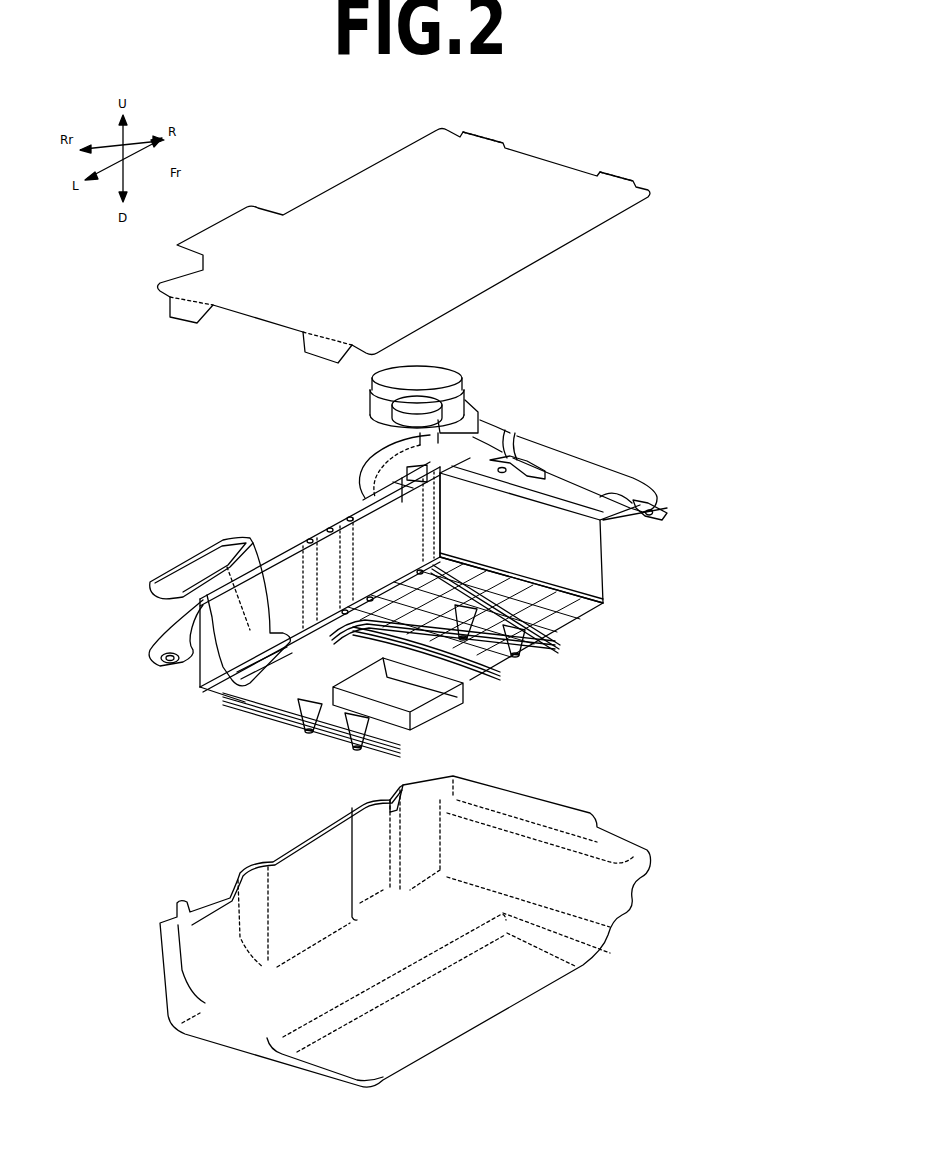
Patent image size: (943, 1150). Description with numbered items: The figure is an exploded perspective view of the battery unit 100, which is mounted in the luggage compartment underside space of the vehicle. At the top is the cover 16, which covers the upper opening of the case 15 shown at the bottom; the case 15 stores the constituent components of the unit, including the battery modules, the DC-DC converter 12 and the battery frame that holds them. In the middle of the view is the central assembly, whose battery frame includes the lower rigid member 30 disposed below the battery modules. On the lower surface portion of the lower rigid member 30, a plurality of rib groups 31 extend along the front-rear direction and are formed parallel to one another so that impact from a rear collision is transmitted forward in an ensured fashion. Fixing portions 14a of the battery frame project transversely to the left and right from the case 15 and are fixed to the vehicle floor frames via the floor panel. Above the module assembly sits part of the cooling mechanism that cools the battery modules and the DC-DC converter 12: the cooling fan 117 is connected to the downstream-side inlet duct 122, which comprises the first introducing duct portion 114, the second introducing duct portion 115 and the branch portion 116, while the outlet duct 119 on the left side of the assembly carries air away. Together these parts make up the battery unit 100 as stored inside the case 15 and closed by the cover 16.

The cover 16 is at (547, 160).
The case 15 is at (530, 993).
The battery unit 100 is at (386, 541).
The cooling fan 117 is at (432, 380).
The branch portion 116 is at (488, 424).
The second introducing duct portion 115 is at (589, 454).
The first introducing duct portion 114 is at (362, 466).
The outlet duct 119 is at (153, 582).
The downstream-side inlet duct 122 is at (614, 454).
The fixing portion 14a is at (540, 462).
The lower rigid member 30 is at (588, 619).
The rib group 31 is at (272, 710).
The DC-DC converter 12 is at (415, 712).